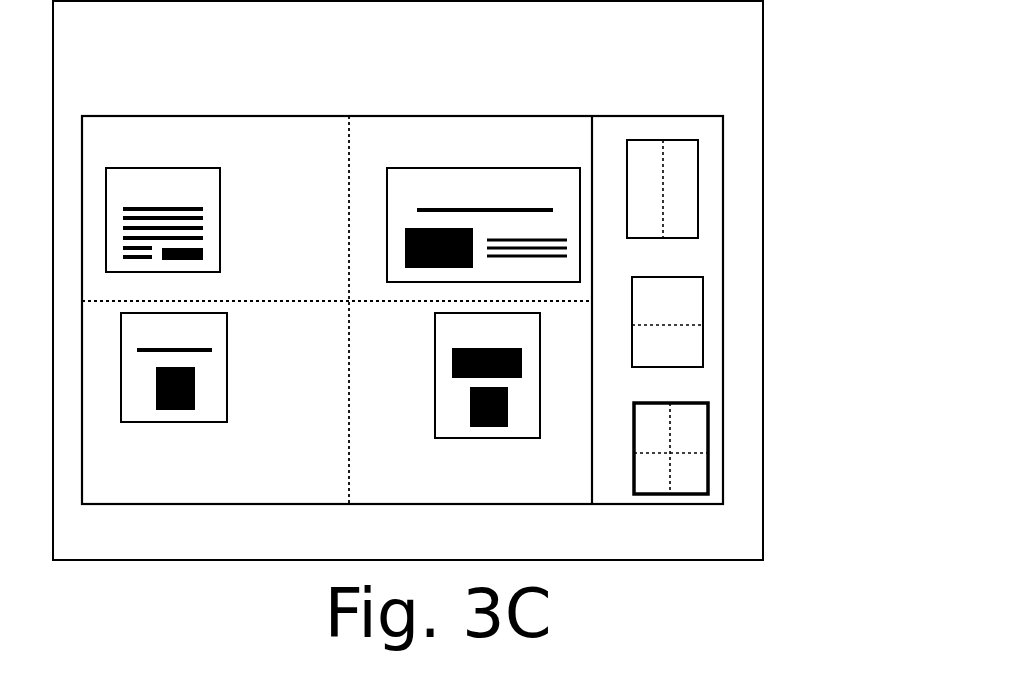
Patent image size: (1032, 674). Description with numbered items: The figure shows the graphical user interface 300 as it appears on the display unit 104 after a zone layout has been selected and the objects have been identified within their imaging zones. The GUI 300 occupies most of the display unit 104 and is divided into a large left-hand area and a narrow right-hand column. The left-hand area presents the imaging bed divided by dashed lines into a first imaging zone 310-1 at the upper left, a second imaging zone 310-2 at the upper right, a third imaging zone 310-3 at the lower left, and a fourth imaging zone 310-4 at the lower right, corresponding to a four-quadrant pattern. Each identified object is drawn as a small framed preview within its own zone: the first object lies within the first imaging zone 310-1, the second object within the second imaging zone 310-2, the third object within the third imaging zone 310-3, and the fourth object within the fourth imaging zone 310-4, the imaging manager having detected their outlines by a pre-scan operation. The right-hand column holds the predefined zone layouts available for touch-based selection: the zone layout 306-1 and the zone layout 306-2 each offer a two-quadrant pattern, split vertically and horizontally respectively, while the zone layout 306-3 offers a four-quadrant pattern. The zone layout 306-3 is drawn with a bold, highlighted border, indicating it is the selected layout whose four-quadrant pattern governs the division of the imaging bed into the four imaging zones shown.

The display unit 104 is at (526, 46).
The graphical user interface 300 is at (490, 115).
The first imaging zone 310-1 is at (252, 157).
The second imaging zone 310-2 is at (427, 143).
The third imaging zone 310-3 is at (198, 465).
The fourth imaging zone 310-4 is at (525, 467).
The zone layout 306-1 is at (699, 160).
The zone layout 306-2 is at (703, 277).
The zone layout 306-3 is at (708, 412).